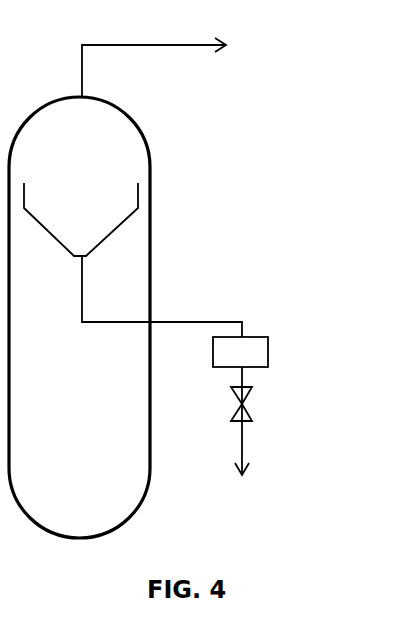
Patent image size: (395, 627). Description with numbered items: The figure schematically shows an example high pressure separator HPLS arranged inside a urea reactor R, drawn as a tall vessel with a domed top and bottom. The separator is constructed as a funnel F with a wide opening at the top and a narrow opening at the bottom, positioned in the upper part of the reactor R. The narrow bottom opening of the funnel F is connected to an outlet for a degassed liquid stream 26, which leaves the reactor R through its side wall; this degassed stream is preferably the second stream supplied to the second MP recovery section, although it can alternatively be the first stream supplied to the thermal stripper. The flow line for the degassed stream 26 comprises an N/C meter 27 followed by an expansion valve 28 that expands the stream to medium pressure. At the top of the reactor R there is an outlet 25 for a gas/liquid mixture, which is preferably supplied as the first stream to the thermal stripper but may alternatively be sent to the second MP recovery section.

The outlet 25 is at (169, 45).
The outlet for a degassed liquid stream 26 is at (169, 321).
The N/C meter 27 is at (270, 353).
The expansion valve 28 is at (249, 408).
The funnel F is at (126, 219).
The urea reactor R is at (143, 505).
The high pressure separator HPLS is at (146, 317).